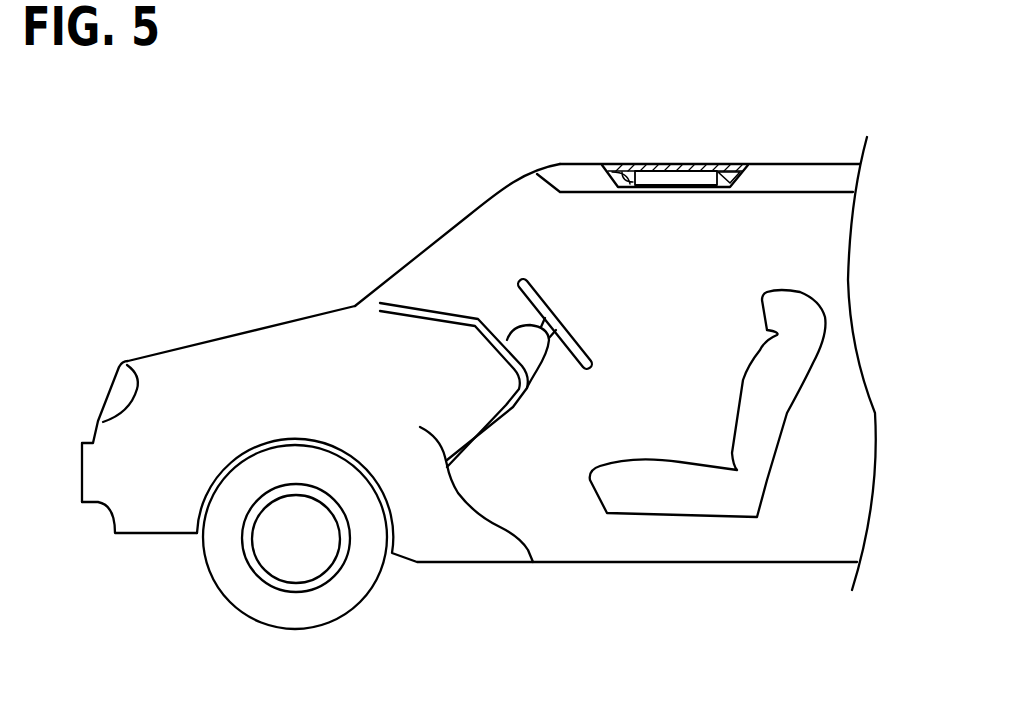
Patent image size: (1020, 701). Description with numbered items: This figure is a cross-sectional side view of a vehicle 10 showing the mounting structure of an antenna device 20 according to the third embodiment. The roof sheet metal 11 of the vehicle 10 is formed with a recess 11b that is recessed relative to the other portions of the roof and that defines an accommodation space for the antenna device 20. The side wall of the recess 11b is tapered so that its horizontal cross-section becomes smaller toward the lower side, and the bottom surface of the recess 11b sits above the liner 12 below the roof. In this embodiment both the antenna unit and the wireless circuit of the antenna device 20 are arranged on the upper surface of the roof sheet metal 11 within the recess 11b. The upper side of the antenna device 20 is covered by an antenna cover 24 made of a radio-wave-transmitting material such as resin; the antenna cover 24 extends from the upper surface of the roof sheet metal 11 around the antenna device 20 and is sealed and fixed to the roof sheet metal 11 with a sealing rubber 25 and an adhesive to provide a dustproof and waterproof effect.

The vehicle 10 is at (540, 150).
The roof sheet metal 11 is at (810, 163).
The recess 11b is at (628, 168).
The liner 12 is at (807, 195).
The antenna device 20 is at (657, 179).
The antenna cover 24 is at (678, 166).
The sealing rubber 25 is at (733, 173).